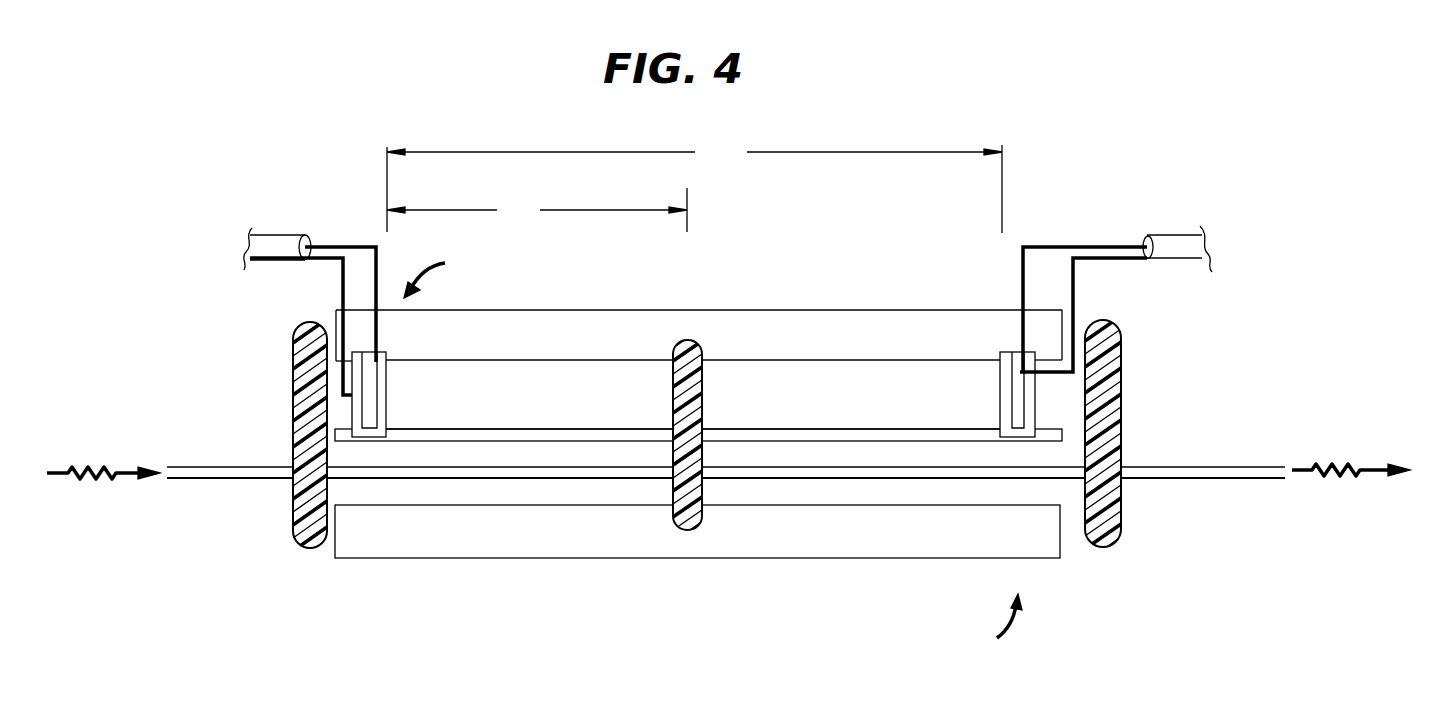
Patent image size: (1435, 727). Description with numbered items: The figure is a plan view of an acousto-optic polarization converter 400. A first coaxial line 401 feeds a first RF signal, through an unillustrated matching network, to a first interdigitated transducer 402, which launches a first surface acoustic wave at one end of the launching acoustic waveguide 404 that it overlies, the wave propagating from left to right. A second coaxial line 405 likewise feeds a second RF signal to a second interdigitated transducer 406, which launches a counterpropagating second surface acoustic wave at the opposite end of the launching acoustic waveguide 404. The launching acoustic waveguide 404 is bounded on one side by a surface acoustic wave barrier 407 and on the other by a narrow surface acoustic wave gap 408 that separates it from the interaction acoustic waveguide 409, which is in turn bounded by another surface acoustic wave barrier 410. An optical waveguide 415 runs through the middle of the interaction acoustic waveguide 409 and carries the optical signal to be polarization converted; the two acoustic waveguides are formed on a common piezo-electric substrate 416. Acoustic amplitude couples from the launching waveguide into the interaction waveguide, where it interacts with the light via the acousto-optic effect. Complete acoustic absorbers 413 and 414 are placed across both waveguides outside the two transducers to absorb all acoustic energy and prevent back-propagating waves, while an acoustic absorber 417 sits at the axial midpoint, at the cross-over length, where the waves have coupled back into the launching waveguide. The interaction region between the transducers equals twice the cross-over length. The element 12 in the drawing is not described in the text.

The polarization converter 400 is at (1030, 103).
The optical fiber 12 is at (441, 274).
The first coaxial line 401 is at (285, 237).
The first interdigitated transducer 402 is at (388, 398).
The launching acoustic waveguide 404 is at (512, 388).
The second coaxial line 405 is at (1168, 237).
The second interdigitated transducer 406 is at (1000, 402).
The surface acoustic wave barrier 407 is at (782, 337).
The surface acoustic wave gap 408 is at (545, 432).
The interaction acoustic waveguide 409 is at (615, 450).
The surface acoustic wave barrier 410 is at (810, 548).
The complete acoustic absorber 413 is at (295, 490).
The complete acoustic absorber 414 is at (1105, 547).
The optical waveguide 415 is at (190, 479).
The piezo-electric substrate 416 is at (990, 632).
The acoustic absorber 417 is at (695, 528).